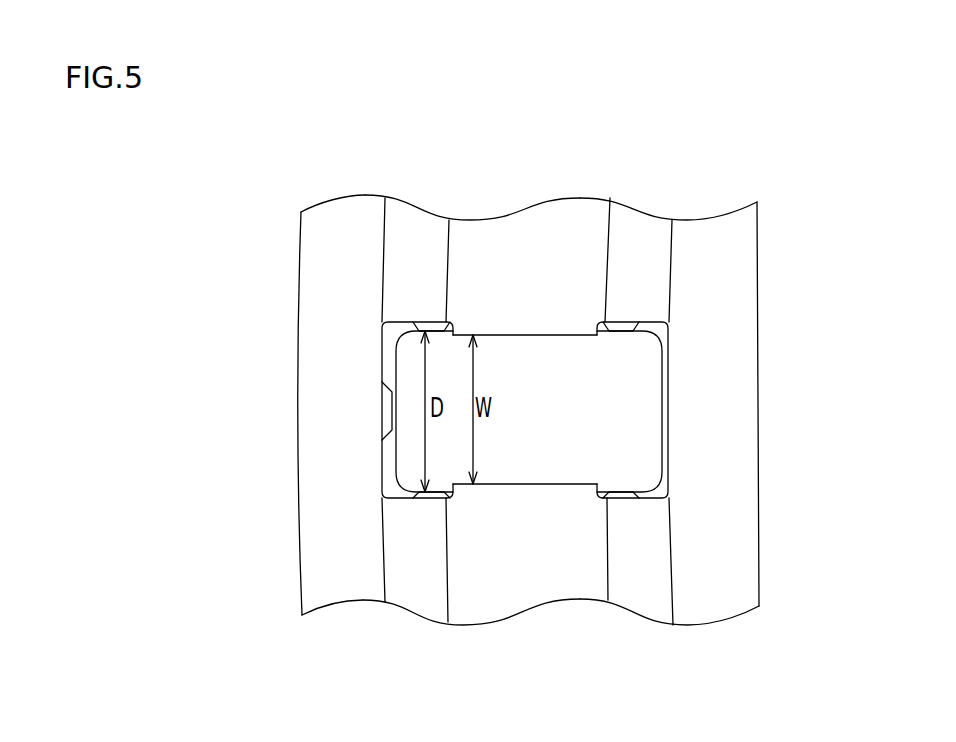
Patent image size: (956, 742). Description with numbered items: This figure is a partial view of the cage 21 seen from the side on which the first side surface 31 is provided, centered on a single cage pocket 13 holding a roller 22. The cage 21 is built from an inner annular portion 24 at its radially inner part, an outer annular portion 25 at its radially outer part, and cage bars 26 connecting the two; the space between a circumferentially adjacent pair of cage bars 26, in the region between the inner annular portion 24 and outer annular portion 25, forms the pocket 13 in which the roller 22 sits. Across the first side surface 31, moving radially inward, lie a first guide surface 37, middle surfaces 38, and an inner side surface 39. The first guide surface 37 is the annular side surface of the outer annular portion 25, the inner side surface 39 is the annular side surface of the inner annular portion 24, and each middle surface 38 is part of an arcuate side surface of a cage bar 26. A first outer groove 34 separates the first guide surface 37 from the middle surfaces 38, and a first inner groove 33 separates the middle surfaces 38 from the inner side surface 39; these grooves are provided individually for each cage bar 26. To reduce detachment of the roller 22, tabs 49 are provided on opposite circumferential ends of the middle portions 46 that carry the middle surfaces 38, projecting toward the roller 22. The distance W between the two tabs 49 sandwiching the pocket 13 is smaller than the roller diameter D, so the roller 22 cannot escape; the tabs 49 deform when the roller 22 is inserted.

The bearing holding portion (pocket) 13 is at (380, 352).
The cage 21 is at (300, 248).
The roller 22 is at (398, 473).
The inner annular portion 24 is at (732, 425).
The outer annular portion 25 is at (307, 389).
The cage bar 26 is at (670, 533).
The first side surface 31 is at (722, 242).
The first inner groove 33 is at (637, 242).
The first outer groove 34 is at (402, 230).
The first guide surface 37 is at (313, 587).
The middle surface 38 is at (503, 228).
The inner side surface 39 is at (727, 603).
The middle portion 46 is at (449, 235).
The tab 49 is at (548, 338).